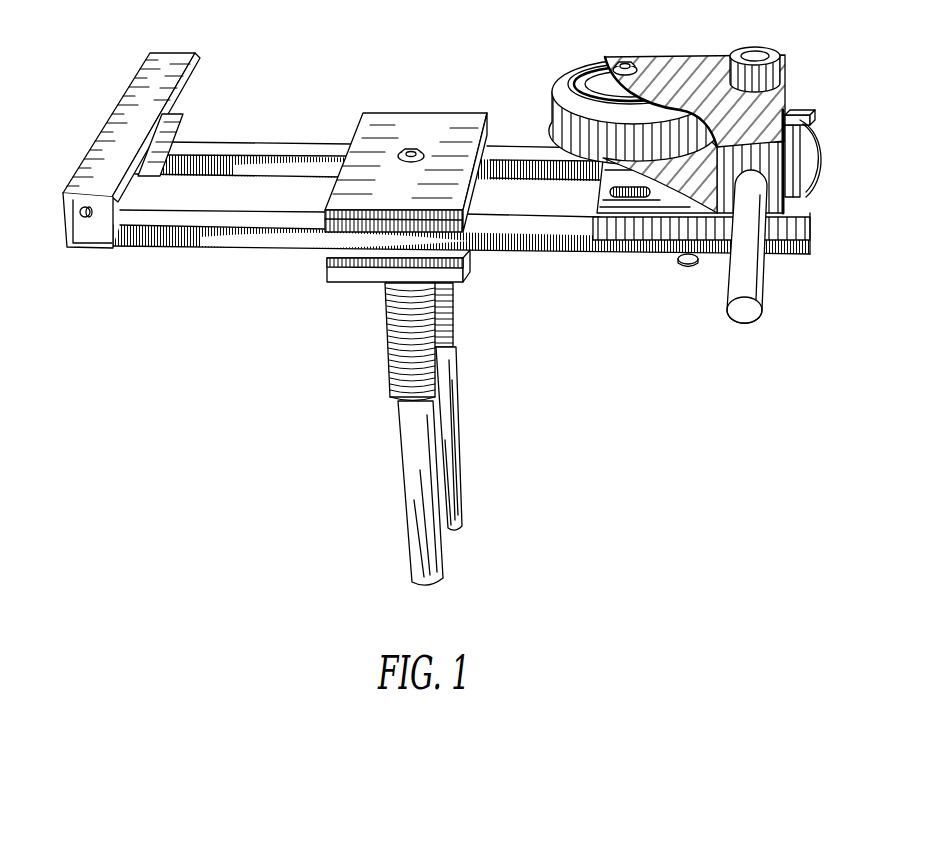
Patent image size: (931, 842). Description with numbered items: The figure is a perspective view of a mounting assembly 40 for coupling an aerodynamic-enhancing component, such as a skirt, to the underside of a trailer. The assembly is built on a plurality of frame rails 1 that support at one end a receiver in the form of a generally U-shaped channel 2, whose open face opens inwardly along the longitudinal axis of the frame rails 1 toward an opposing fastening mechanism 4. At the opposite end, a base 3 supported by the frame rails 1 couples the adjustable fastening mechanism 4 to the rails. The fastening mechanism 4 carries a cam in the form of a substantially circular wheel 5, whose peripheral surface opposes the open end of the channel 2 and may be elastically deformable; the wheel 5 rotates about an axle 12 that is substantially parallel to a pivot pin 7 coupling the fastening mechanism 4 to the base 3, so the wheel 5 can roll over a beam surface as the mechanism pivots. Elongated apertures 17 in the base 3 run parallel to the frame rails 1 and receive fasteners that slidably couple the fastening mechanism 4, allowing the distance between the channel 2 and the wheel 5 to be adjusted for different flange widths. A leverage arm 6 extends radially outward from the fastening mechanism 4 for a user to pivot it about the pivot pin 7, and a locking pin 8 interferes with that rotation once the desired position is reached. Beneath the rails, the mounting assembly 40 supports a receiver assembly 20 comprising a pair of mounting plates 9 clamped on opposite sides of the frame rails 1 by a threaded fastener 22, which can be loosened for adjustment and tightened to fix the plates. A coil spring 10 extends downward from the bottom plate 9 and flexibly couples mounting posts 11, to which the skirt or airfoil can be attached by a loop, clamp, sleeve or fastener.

The frame rails 1 is at (232, 152).
The channel 2 is at (163, 58).
The base 3 is at (808, 227).
The fastening mechanism 4 is at (780, 96).
The wheel 5 is at (562, 98).
The leverage arm 6 is at (766, 283).
The pivot pin 7 is at (764, 47).
The locking pin 8 is at (813, 140).
The mounting plates 9 is at (405, 118).
The coil spring 10 is at (397, 378).
The mounting posts 11 is at (458, 473).
The axle 12 is at (628, 62).
The elongated apertures 17 is at (640, 198).
The receiver assembly 20 is at (430, 319).
The threaded fastener 22 is at (405, 150).
The mounting assembly 40 is at (465, 297).